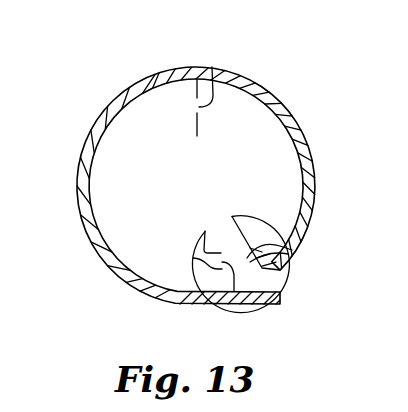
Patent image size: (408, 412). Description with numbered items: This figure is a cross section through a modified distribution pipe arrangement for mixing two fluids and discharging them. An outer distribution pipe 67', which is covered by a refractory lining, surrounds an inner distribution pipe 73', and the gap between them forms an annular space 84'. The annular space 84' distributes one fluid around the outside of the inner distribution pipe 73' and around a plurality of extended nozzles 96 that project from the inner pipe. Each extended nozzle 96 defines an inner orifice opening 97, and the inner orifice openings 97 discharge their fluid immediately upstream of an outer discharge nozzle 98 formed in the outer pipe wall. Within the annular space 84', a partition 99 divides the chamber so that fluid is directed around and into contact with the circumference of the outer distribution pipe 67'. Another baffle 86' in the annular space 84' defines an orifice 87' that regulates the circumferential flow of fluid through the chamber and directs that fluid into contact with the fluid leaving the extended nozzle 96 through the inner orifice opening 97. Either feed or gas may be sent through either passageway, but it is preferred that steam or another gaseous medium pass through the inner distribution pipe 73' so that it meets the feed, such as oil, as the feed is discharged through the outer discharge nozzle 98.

The outer distribution pipe 67' is at (223, 185).
The annular space 84' is at (109, 170).
The orifice 87' is at (228, 70).
The baffle 86' is at (231, 109).
The inner distribution pipe 73' is at (196, 255).
The extended nozzle 96 is at (194, 258).
The inner orifice opening 97 is at (213, 305).
The outer discharge nozzle 98 is at (273, 278).
The partition 99 is at (286, 247).